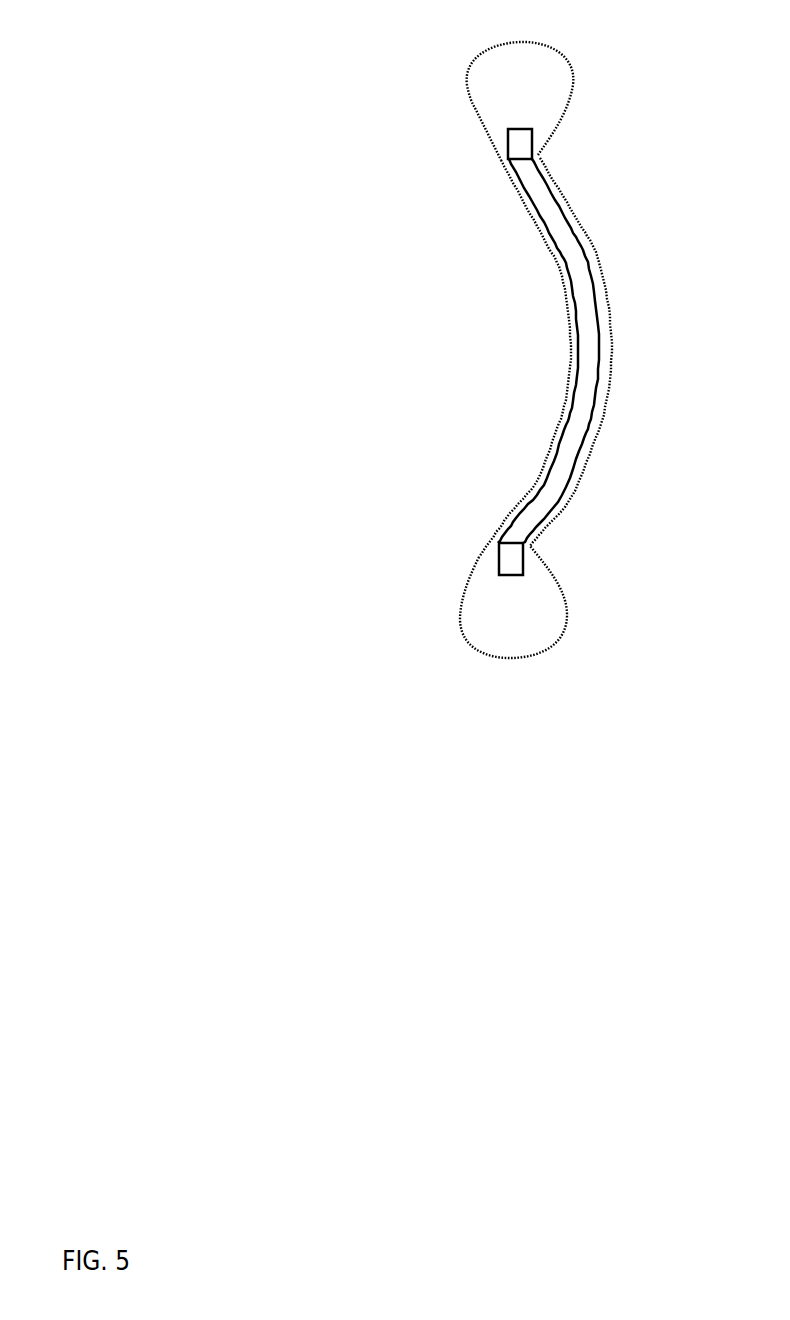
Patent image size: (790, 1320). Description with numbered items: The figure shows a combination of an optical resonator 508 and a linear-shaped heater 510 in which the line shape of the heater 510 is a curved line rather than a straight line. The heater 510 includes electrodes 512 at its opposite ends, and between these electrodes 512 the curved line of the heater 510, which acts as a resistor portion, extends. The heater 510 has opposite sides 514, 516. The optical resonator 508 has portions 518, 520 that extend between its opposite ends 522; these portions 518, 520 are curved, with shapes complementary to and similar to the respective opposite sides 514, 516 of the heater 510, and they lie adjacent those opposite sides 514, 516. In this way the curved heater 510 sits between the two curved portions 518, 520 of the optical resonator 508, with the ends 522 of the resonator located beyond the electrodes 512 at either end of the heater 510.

The optical resonator 508 is at (556, 54).
The linear-shaped heater 510 is at (576, 351).
The electrodes 512 is at (532, 141).
The first side of heater 514 is at (553, 240).
The second side of heater 516 is at (598, 253).
The first portion of optical resonator 518 is at (568, 325).
The second portion of optical resonator 520 is at (612, 360).
The opposite ends of optical resonator 522 is at (478, 134).